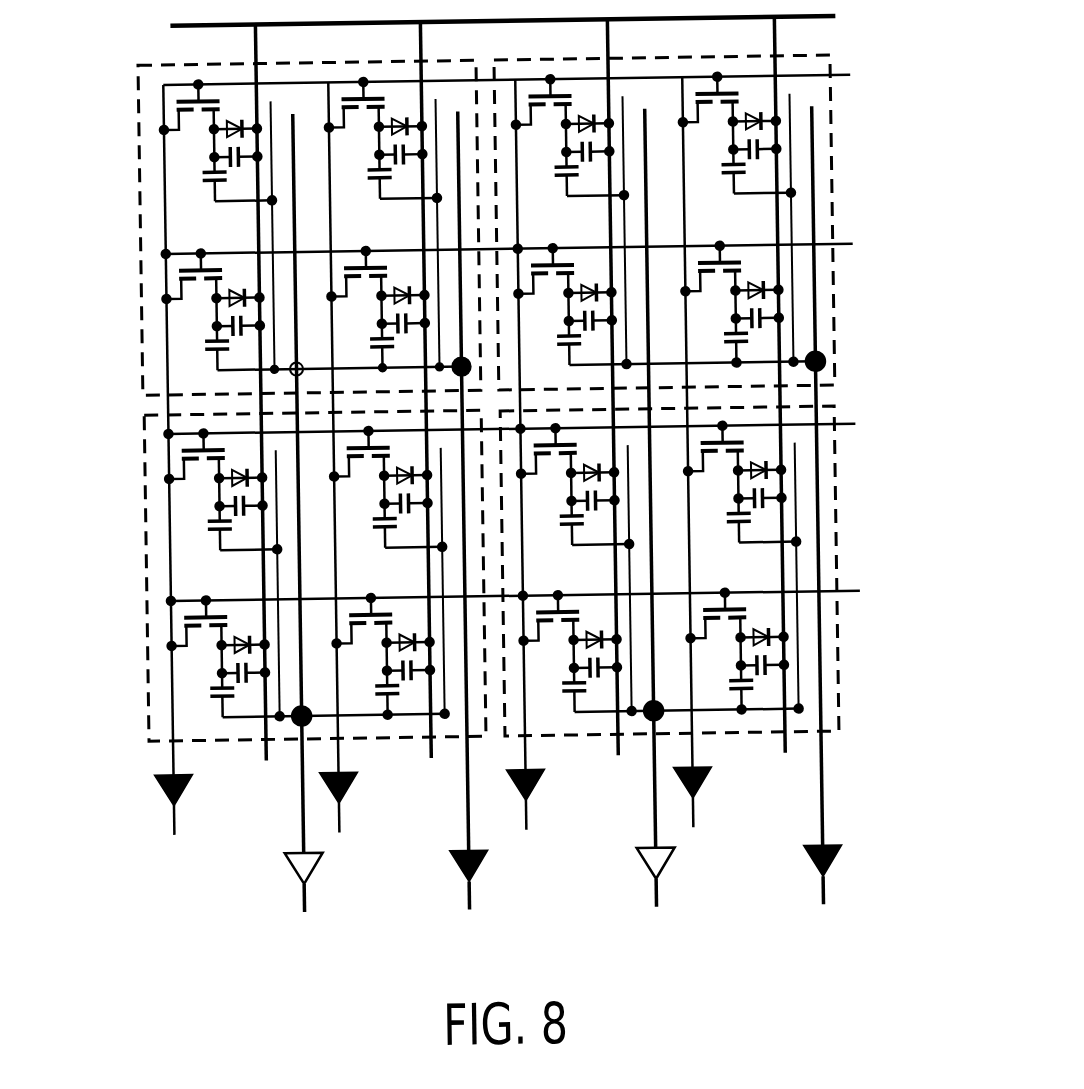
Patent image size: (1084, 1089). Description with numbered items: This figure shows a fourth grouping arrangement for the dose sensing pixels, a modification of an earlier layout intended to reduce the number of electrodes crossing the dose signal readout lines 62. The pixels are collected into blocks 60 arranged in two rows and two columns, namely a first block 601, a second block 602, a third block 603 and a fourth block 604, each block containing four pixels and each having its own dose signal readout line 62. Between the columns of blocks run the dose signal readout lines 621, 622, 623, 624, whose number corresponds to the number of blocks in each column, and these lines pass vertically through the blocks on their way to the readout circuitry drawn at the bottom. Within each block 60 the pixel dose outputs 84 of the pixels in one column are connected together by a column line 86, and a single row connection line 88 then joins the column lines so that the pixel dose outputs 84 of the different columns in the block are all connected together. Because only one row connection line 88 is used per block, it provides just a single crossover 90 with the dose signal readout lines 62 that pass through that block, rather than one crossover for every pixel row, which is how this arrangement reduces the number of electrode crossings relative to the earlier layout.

The block of pixels 60 is at (488, 398).
The first block of pixels 601 is at (143, 166).
The second block of pixels 602 is at (836, 165).
The third block of pixels 603 is at (145, 513).
The fourth block of pixels 604 is at (835, 515).
The dose signal readout line 62 is at (596, 508).
The first dose signal readout line 621 is at (311, 827).
The second dose signal readout line 622 is at (474, 827).
The third dose signal readout line 623 is at (663, 829).
The fourth dose signal readout line 624 is at (830, 831).
The pixel dose output 84 is at (216, 197).
The column line 86 is at (276, 162).
The row connection line 88 is at (318, 364).
The crossover 90 is at (291, 368).